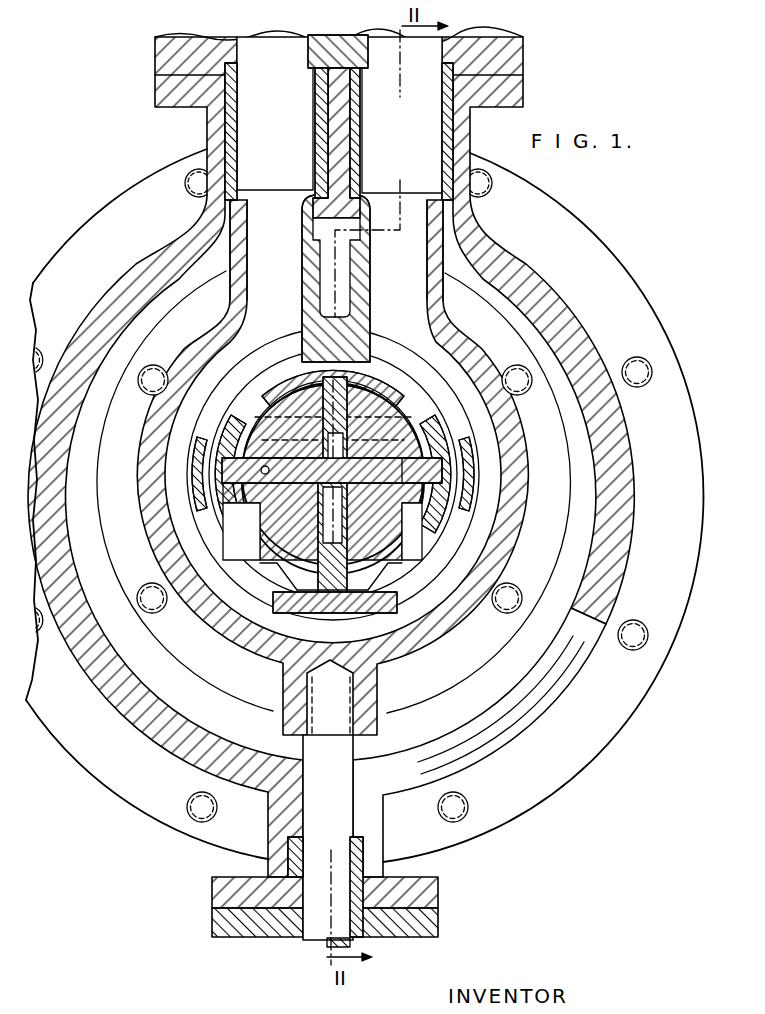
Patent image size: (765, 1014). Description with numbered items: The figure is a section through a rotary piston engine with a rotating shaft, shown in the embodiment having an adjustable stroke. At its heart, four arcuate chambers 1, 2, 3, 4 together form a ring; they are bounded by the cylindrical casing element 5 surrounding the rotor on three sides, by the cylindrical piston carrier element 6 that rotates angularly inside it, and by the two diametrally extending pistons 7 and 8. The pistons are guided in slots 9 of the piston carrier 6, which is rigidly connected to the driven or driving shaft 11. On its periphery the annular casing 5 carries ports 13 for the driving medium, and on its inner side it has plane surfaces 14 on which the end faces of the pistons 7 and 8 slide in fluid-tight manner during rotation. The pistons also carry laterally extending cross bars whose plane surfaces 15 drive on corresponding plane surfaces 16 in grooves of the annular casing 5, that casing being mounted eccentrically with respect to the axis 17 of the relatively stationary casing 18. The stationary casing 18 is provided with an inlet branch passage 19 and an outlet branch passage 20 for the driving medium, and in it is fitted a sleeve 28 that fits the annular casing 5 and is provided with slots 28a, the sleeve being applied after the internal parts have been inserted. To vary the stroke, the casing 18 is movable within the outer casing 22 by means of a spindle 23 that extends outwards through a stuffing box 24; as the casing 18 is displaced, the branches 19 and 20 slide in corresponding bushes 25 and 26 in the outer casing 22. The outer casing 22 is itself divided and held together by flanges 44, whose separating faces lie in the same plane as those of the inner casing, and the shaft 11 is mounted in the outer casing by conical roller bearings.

The arcuate chamber 1 is at (243, 452).
The arcuate chamber 2 is at (240, 556).
The arcuate chamber 3 is at (404, 556).
The arcuate chamber 4 is at (432, 456).
The cylindrical casing element 5 is at (393, 390).
The piston carrier element 6 is at (344, 523).
The piston 7 is at (334, 540).
The piston 8 is at (225, 471).
The slot 9 is at (327, 443).
The shaft 11 is at (362, 457).
The port 13 is at (257, 398).
The plane surface 14 is at (321, 493).
The plane surface of cross bar 15 is at (280, 582).
The plane surface in groove 16 is at (284, 546).
The axis 17 is at (312, 550).
The stationary casing 18 is at (513, 505).
The inlet branch passage 19 is at (247, 257).
The outlet branch passage 20 is at (430, 267).
The outer casing 22 is at (548, 294).
The spindle 23 is at (318, 828).
The stuffing box 24 is at (358, 845).
The bush 25 is at (237, 178).
The bush 26 is at (442, 166).
The sleeve 28 is at (303, 350).
The slot 28a is at (215, 433).
The flange 44 is at (446, 501).